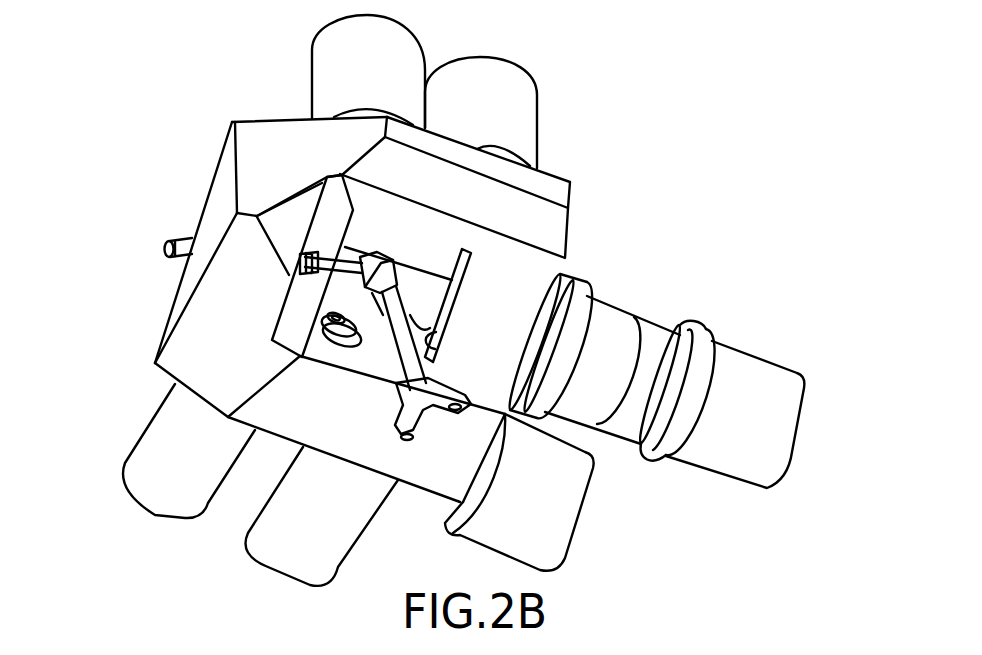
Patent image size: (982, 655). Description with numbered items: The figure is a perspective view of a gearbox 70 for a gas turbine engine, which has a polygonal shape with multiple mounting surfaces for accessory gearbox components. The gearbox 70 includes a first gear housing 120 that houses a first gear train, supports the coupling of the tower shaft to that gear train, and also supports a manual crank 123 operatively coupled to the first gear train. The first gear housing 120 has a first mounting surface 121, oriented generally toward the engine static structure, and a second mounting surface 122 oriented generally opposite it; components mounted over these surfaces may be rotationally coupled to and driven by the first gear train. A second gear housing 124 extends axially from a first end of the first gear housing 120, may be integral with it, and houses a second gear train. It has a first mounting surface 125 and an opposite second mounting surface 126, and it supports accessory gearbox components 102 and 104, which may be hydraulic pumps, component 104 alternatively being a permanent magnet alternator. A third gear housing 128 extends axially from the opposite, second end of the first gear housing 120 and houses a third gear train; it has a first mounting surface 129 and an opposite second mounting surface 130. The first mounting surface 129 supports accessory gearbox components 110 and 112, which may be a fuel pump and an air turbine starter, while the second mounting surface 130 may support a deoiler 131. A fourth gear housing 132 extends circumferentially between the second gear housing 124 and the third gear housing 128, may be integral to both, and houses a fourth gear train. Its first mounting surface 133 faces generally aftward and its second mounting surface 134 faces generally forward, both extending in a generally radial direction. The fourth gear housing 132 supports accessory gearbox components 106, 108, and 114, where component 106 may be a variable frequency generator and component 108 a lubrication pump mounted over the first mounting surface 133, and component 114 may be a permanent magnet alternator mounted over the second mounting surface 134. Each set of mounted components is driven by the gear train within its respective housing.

The gearbox 70 is at (186, 166).
The accessory gearbox component 102 is at (317, 63).
The accessory gearbox component 104 is at (518, 80).
The accessory gearbox component 106 is at (758, 370).
The accessory gearbox component 108 is at (567, 527).
The accessory gearbox component 110 is at (260, 562).
The accessory gearbox component 112 is at (150, 513).
The accessory gearbox component 114 is at (412, 292).
The first gear housing 120 is at (192, 278).
The first mounting surface 121 is at (167, 306).
The second mounting surface 122 is at (320, 319).
The manual crank 123 is at (335, 262).
The second gear housing 124 is at (538, 233).
The first mounting surface 125 is at (556, 173).
The second mounting surface 126 is at (428, 245).
The third gear housing 128 is at (398, 458).
The first mounting surface 129 is at (270, 432).
The second mounting surface 130 is at (395, 369).
The deoiler 131 is at (340, 345).
The fourth gear housing 132 is at (518, 295).
The first mounting surface 133 is at (523, 372).
The second mounting surface 134 is at (432, 340).